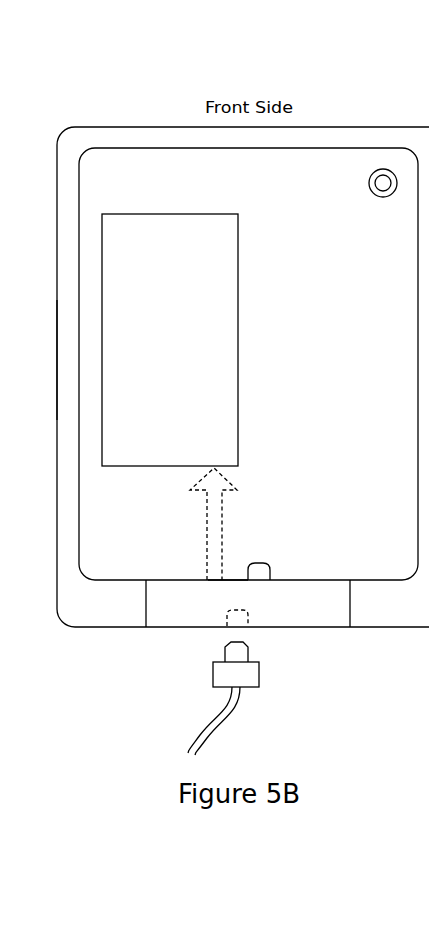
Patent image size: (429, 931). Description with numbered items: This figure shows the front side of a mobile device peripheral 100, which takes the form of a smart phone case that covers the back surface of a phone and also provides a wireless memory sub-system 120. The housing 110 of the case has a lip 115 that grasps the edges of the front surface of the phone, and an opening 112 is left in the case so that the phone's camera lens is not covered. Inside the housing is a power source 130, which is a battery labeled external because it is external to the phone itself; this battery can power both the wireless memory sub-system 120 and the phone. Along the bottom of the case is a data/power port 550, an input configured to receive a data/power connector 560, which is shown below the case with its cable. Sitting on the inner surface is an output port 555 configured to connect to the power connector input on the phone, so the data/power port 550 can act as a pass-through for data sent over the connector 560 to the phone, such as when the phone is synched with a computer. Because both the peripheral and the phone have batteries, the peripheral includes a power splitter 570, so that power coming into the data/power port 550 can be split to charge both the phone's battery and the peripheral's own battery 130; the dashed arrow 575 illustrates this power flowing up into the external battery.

The mobile device peripheral 100 is at (353, 120).
The housing 110 is at (130, 185).
The opening 112 is at (373, 193).
The lip 115 is at (93, 137).
The wireless memory sub-system 120 is at (31, 360).
The power source 130 is at (187, 418).
The data/power port 550 is at (146, 608).
The output port 555 is at (270, 568).
The data/power connector 560 is at (259, 675).
The power splitter 570 is at (247, 566).
The arrow 575 is at (237, 490).